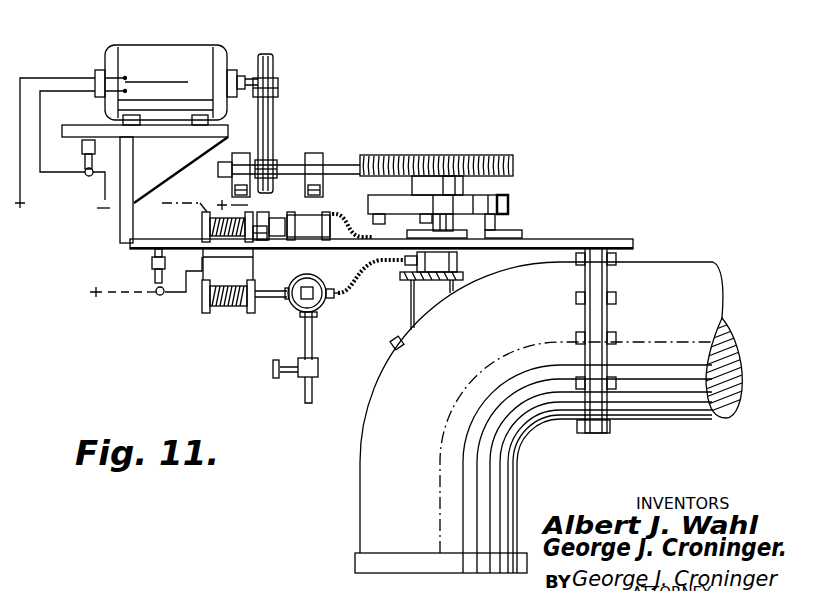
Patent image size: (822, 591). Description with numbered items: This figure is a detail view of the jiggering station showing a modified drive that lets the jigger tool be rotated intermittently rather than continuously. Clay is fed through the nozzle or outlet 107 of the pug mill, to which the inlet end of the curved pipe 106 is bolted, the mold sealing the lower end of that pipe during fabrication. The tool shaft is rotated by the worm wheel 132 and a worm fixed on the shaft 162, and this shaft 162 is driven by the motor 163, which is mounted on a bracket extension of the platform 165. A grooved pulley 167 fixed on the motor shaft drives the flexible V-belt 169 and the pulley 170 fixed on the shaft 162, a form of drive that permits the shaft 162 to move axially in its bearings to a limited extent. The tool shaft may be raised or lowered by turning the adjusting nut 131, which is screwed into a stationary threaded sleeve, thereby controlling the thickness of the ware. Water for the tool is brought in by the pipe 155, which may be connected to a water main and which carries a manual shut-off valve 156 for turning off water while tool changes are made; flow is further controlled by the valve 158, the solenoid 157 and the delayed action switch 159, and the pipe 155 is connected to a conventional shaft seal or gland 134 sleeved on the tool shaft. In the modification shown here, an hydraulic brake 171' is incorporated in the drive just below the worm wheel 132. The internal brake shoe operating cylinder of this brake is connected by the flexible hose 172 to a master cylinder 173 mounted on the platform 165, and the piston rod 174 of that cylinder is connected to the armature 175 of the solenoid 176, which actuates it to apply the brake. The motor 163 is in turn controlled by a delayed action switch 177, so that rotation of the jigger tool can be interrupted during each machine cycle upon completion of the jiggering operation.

The curved pipe 106 is at (362, 478).
The nozzle or outlet of pug mill 107 is at (668, 262).
The adjusting nut 131 is at (409, 281).
The worm wheel 132 is at (478, 155).
The shaft seal or gland 134 is at (457, 261).
The water pipe 155 is at (318, 396).
The manual shut-off valve 156 is at (305, 370).
The solenoid 157 is at (228, 309).
The valve 158 is at (300, 312).
The delayed action switch 159 is at (152, 265).
The shaft 162 is at (347, 160).
The motor 163 is at (205, 44).
The platform 165 is at (557, 238).
The grooved pulley 167 is at (273, 63).
The flexible V-belt 169 is at (273, 117).
The pulley 170 is at (273, 147).
The hydraulic brake 171' is at (468, 198).
The flexible hose 172 is at (385, 240).
The master cylinder 173 is at (310, 216).
The piston rod 174 is at (272, 224).
The armature 175 is at (270, 242).
The solenoid 176 is at (201, 224).
The delayed action switch 177 is at (82, 148).